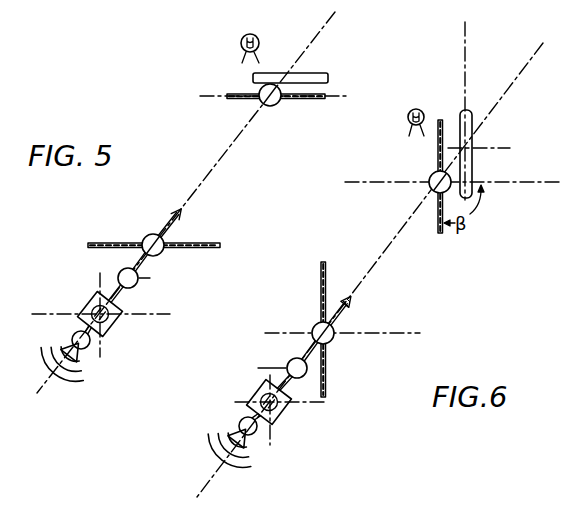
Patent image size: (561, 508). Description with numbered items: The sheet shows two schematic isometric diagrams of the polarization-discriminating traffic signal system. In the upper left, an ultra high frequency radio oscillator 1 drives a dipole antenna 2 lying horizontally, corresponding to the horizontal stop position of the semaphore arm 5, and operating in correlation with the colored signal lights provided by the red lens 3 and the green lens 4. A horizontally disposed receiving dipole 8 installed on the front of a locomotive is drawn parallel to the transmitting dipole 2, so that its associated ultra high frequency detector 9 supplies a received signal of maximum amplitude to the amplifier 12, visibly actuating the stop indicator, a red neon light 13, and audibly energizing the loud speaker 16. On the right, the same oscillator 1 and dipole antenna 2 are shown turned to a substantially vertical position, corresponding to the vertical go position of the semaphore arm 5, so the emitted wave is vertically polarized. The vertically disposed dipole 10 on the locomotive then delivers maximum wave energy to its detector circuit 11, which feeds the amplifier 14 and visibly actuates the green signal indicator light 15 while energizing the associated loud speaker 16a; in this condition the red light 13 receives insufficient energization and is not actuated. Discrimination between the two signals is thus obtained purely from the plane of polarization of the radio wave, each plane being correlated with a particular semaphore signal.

In FIG. 5, the ultra high frequency radio oscillator 1 is at (276, 105).
In FIG. 6, the ultra high frequency radio oscillator 1 is at (430, 176).
In FIG. 5, the dipole antenna 2 is at (238, 91).
In FIG. 6, the dipole antenna 2 is at (443, 221).
In FIG. 5, the lens 3 is at (250, 34).
In FIG. 6, the lens 4 is at (417, 109).
In FIG. 5, the semaphore arm 5 is at (319, 72).
In FIG. 6, the semaphore arm 5 is at (474, 166).
In FIG. 5, the horizontally disposed receiving dipole 8 is at (203, 243).
In FIG. 5, the ultra high frequency detector 9 is at (142, 240).
In FIG. 6, the vertically disposed dipole 10 is at (327, 284).
In FIG. 6, the ultra high frequency detector 11 is at (346, 313).
In FIG. 5, the amplifier 12 is at (117, 275).
In FIG. 5, the red neon light 13 is at (113, 327).
In FIG. 6, the amplifier 14 is at (299, 357).
In FIG. 6, the green signal indicator light 15 is at (285, 412).
In FIG. 5, the loud speaker 16 is at (85, 361).
In FIG. 6, the loud speaker 16a is at (250, 441).